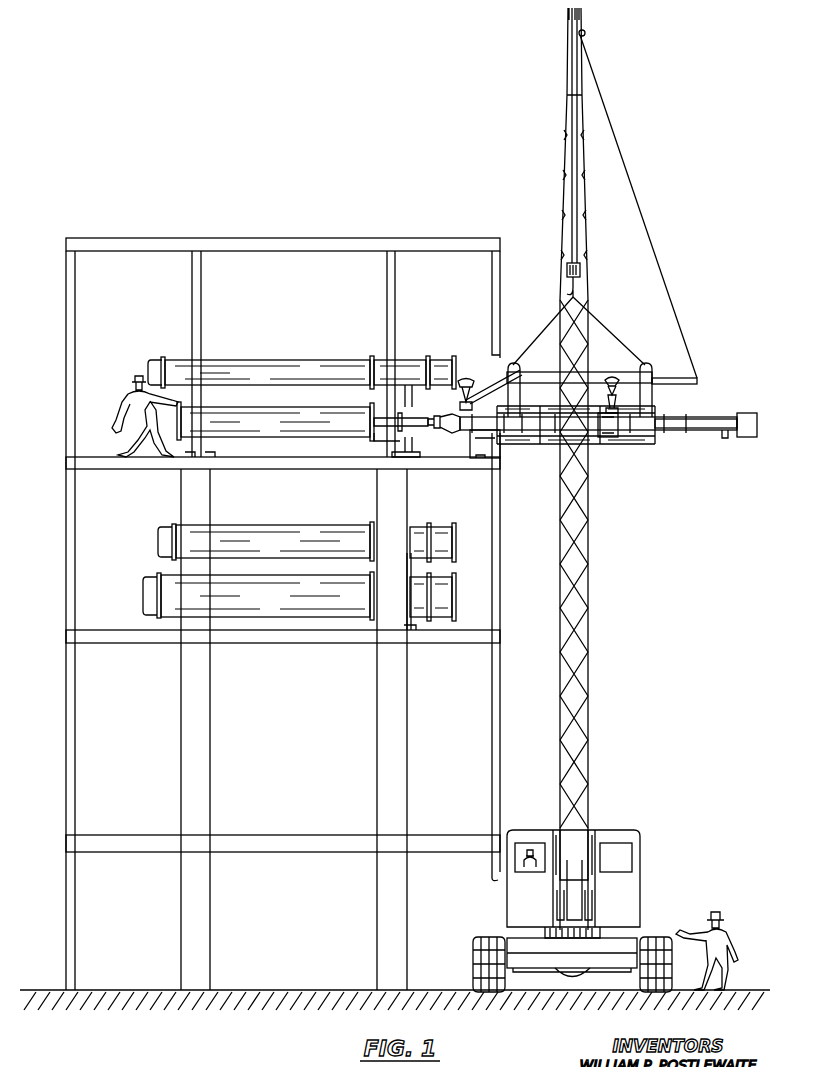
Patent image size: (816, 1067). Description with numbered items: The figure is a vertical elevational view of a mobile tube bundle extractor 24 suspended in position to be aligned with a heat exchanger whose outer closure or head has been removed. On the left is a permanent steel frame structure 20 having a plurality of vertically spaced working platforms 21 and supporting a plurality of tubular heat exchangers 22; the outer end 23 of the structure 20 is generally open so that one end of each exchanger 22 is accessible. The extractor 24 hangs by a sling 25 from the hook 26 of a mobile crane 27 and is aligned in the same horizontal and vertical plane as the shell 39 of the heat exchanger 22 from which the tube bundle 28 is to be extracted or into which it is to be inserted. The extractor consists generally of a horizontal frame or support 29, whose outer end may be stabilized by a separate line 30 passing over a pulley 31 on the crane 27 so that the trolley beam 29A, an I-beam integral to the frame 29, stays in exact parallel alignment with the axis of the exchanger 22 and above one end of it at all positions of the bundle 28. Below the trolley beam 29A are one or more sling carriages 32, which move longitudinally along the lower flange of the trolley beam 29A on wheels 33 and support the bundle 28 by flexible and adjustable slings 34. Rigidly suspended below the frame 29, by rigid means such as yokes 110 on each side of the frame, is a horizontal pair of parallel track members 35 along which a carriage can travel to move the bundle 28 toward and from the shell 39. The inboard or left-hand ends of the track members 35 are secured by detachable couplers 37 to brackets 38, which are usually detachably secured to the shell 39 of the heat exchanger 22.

The permanent steel frame structure 20 is at (258, 238).
The working platforms 21 is at (112, 470).
The tubular heat exchangers 22 is at (265, 360).
The outer end 23 is at (492, 745).
The mobile tube bundle extractor 24 is at (710, 418).
The sling 25 is at (606, 333).
The hook 26 is at (582, 290).
The mobile crane 27 is at (562, 165).
The tube bundle 28 is at (542, 444).
The horizontal frame 29 is at (625, 372).
The trolley beam 29A is at (672, 378).
The line 30 is at (648, 226).
The pulley 31 is at (584, 30).
The sling carriages 32 is at (470, 380).
The wheels 33 is at (612, 380).
The slings 34 is at (470, 447).
The track members 35 is at (670, 432).
The detachable couplers 37 is at (447, 415).
The brackets 38 is at (375, 413).
The shell 39 is at (380, 442).
The yokes 110 is at (520, 398).